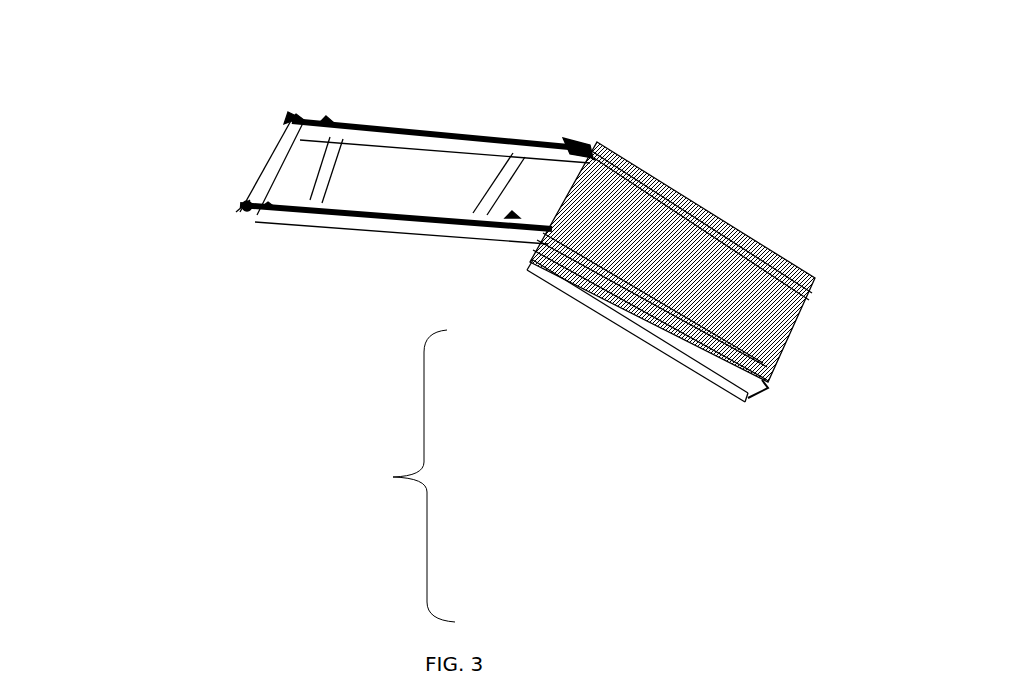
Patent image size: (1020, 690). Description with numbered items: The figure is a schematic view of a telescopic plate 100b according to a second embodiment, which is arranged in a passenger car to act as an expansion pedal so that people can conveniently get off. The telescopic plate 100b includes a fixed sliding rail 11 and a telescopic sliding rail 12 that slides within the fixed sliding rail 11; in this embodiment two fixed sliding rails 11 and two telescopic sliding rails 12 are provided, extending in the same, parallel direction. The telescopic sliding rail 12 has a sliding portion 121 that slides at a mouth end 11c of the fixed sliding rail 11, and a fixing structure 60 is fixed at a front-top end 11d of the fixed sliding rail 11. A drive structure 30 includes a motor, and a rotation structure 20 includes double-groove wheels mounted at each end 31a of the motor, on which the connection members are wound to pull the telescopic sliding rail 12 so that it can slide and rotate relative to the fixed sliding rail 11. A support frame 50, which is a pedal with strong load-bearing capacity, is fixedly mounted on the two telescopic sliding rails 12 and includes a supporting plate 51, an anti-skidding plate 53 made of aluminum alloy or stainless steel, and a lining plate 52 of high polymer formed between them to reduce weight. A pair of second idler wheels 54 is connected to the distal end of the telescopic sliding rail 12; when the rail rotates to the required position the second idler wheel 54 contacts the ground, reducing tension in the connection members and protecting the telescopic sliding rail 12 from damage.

The telescopic plate 100b is at (342, 342).
The fixed sliding rail 11 is at (452, 130).
The mouth end 11c is at (583, 155).
The front-top end 11d is at (568, 142).
The telescopic sliding rail 12 is at (710, 203).
The sliding portion 121 is at (635, 188).
The rotation structure 20 is at (290, 123).
The drive structure 30 is at (270, 150).
The end of the motor 31a is at (247, 198).
The support frame 50 is at (401, 476).
The supporting plate 51 is at (582, 306).
The lining plate 52 is at (623, 327).
The anti-skidding plate 53 is at (677, 353).
The second idler wheel 54 is at (748, 408).
The fixing structure 60 is at (568, 140).